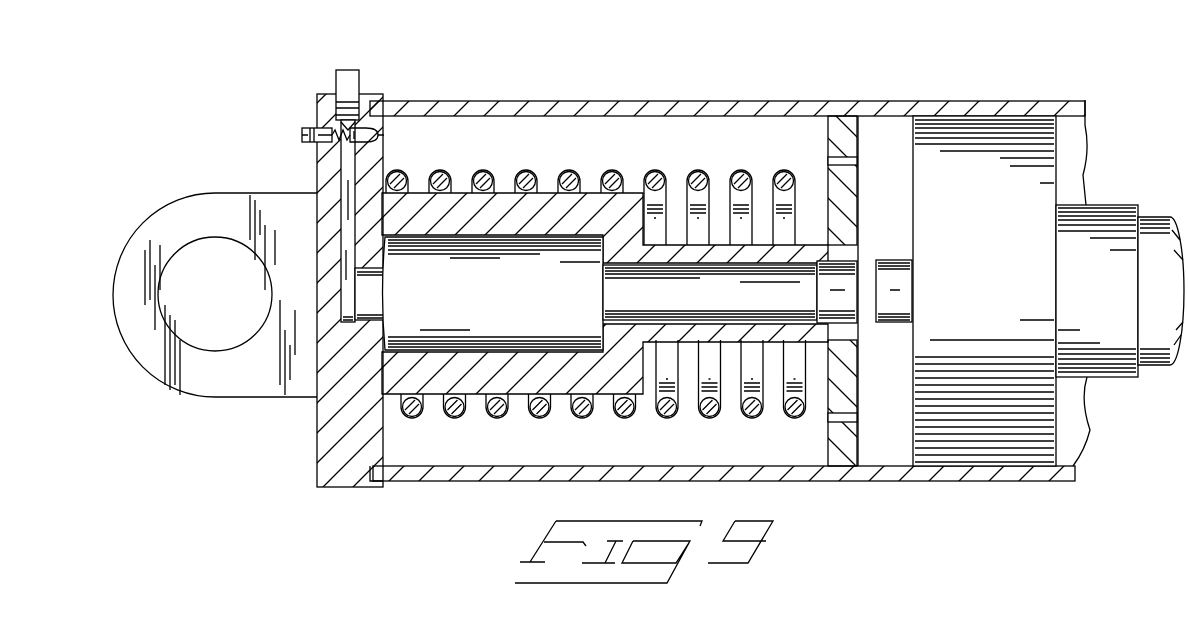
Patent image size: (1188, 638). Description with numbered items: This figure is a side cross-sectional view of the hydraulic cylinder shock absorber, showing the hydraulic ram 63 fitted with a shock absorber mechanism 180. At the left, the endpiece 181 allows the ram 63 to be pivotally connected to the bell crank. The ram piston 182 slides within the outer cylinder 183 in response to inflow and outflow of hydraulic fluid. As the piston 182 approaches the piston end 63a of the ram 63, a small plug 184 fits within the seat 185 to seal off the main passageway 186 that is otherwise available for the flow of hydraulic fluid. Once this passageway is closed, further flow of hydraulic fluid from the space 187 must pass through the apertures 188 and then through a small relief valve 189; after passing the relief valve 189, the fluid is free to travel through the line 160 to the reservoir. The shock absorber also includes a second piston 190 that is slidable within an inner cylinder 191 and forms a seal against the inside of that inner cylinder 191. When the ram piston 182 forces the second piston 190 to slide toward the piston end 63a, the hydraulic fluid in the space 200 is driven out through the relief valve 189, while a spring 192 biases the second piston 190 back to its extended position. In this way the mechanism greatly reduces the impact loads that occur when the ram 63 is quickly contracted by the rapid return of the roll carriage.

The hydraulic ram 63 is at (993, 88).
The piston end 63a is at (317, 459).
The line 160 is at (360, 75).
The shock absorber mechanism 180 is at (730, 274).
The endpiece 181 is at (162, 387).
The ram piston 182 is at (984, 291).
The outer cylinder 183 is at (612, 100).
The plug 184 is at (900, 260).
The seat 185 is at (858, 320).
The main passageway 186 is at (586, 293).
The space 187 is at (868, 290).
The apertures 188 is at (836, 291).
The relief valve 189 is at (397, 135).
The second piston 190 is at (678, 245).
The inner cylinder 191 is at (548, 192).
The spring 192 is at (455, 172).
The space 200 is at (596, 289).